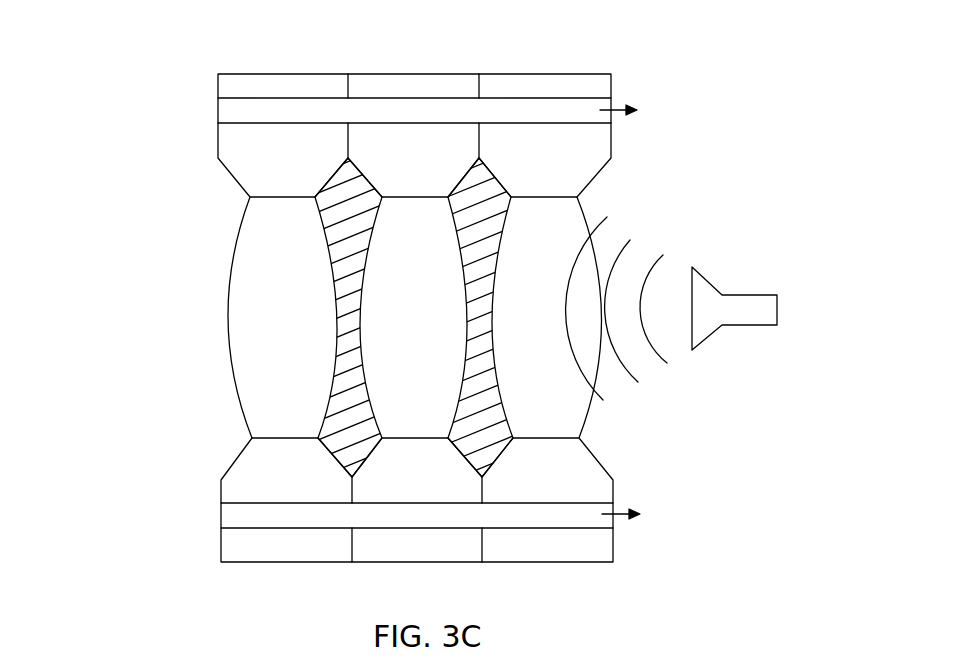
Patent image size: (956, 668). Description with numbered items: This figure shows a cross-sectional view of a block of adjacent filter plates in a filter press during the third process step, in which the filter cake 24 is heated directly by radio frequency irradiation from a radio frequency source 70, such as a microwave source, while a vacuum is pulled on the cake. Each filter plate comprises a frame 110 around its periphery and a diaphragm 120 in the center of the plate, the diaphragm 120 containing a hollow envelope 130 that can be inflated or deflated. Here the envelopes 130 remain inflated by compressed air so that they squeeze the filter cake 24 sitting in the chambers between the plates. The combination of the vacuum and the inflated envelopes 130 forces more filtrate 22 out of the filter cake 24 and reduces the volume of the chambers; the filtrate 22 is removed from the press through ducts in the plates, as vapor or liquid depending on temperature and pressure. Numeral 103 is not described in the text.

The actuator assembly 103 is at (158, 123).
The filtrate 22 is at (545, 113).
The filter cake 24 is at (480, 434).
The frame 110 is at (243, 186).
The diaphragm 120 is at (230, 362).
The hollow envelope 130 is at (268, 397).
The radio frequency source 70 is at (746, 307).